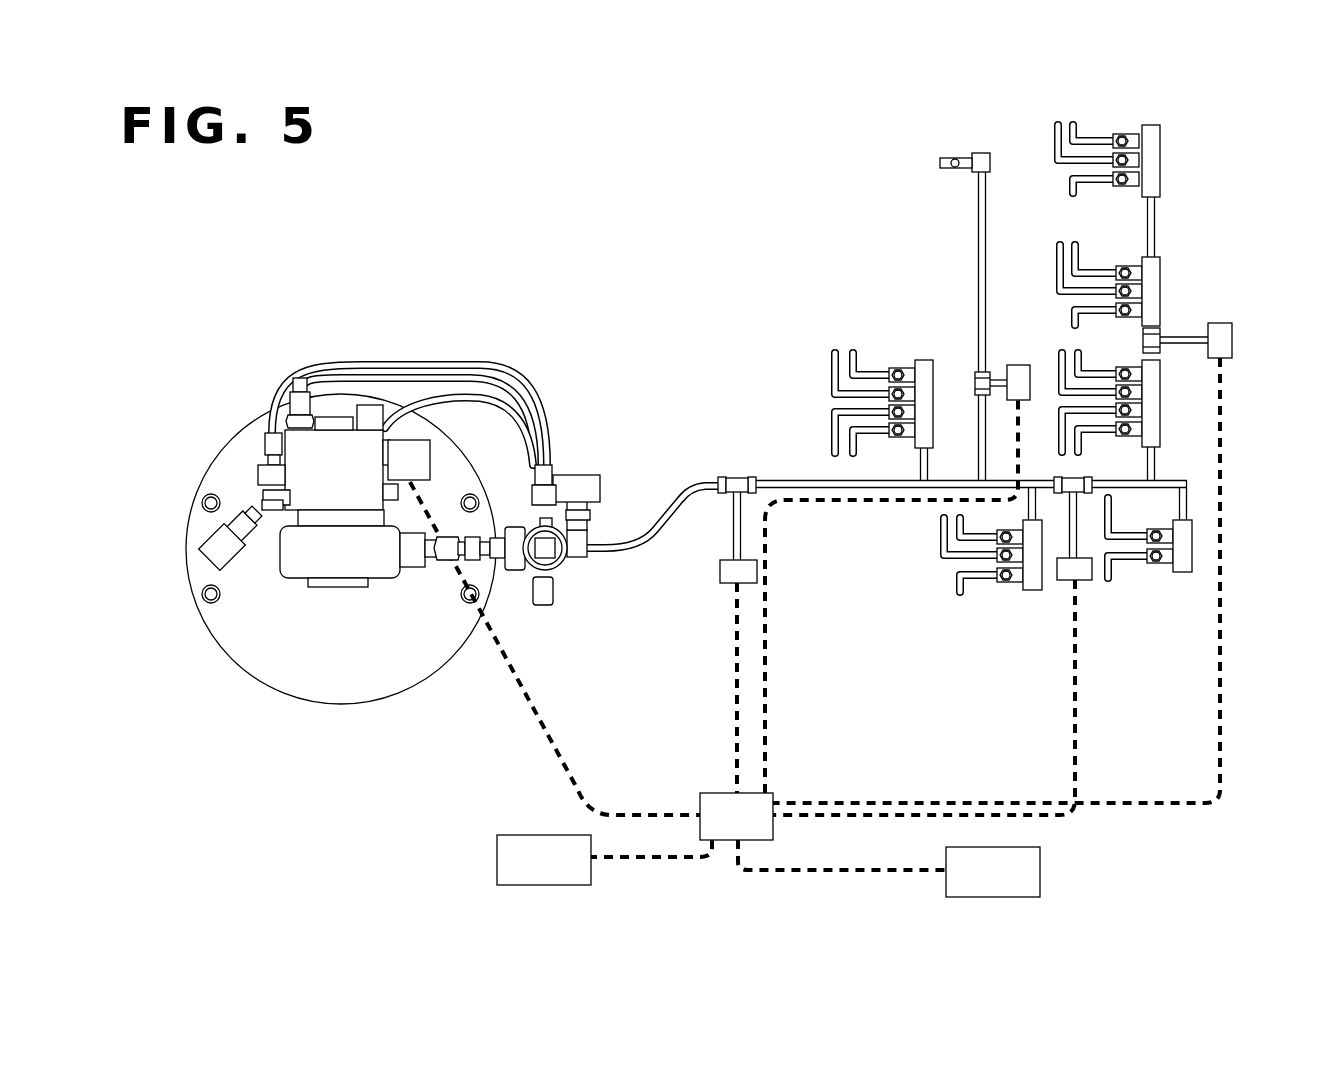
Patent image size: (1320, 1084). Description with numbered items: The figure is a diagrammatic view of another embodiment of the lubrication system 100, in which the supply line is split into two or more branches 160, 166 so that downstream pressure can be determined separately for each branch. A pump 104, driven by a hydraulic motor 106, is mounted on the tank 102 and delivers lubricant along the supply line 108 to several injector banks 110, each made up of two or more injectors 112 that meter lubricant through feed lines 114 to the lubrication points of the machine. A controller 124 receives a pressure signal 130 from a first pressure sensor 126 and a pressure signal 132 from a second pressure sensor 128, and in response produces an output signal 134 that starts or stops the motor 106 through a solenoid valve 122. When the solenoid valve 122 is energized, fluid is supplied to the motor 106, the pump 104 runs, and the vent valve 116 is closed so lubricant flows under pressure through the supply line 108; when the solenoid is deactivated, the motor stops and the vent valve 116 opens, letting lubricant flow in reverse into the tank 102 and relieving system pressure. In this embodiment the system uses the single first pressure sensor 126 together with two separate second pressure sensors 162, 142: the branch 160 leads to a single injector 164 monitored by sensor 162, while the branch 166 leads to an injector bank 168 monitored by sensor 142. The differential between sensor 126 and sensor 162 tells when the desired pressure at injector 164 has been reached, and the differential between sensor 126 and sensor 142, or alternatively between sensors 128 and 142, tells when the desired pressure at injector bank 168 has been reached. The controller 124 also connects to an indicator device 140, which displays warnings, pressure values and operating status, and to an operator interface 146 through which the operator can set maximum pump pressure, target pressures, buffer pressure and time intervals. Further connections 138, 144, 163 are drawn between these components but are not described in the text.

The lubrication system 100 is at (681, 239).
The tank 102 is at (362, 703).
The pump 104 is at (298, 575).
The hydraulic motor 106 is at (335, 430).
The supply line 108 is at (678, 495).
The injector banks 110 is at (922, 362).
The injectors 112 is at (896, 372).
The feed lines 114 is at (835, 372).
The vent valve 116 is at (550, 562).
The solenoid valve 122 is at (410, 450).
The controller 124 is at (736, 816).
The first pressure sensor 126 is at (720, 573).
The second pressure sensor 128 is at (1080, 582).
The pressure signal 130 is at (733, 640).
The pressure signal 132 is at (1070, 700).
The output signal 134 is at (548, 730).
The control line 138 is at (725, 858).
The indicator device 140 is at (993, 872).
The second pressure sensor 142 is at (1230, 345).
The sensor signal line 144 is at (1215, 675).
The operator interface 146 is at (604, 860).
The branch 160 is at (978, 228).
The second pressure sensor 162 is at (1015, 370).
The sensor signal line 163 is at (767, 665).
The single injector 164 is at (972, 158).
The branch 166 is at (1155, 215).
The injector bank 168 is at (1158, 150).